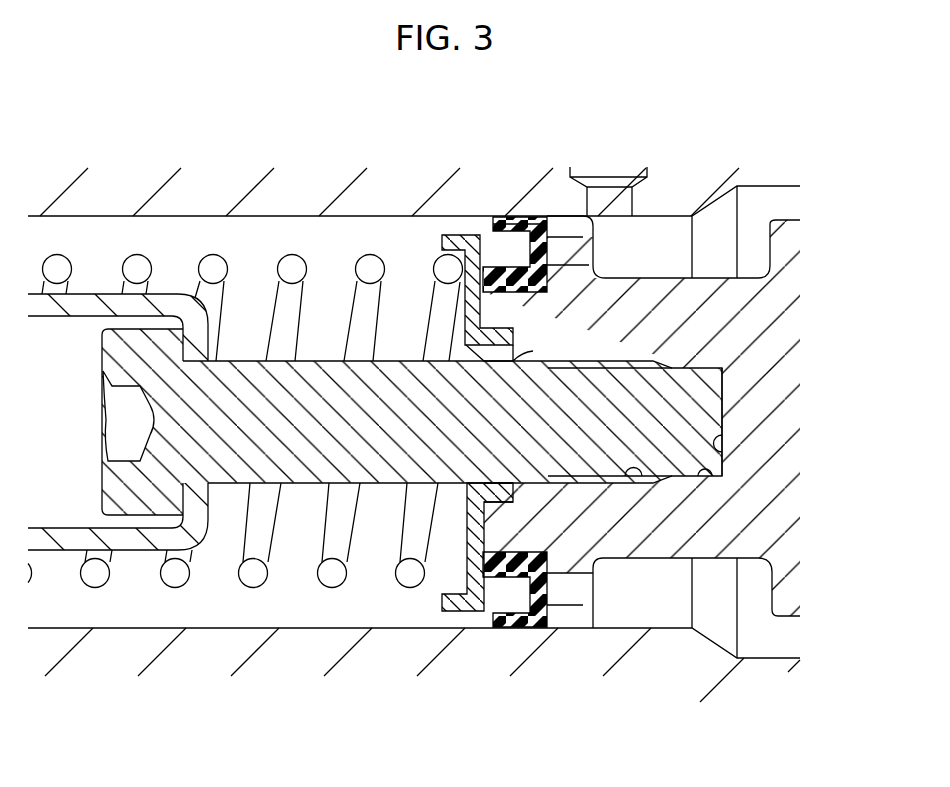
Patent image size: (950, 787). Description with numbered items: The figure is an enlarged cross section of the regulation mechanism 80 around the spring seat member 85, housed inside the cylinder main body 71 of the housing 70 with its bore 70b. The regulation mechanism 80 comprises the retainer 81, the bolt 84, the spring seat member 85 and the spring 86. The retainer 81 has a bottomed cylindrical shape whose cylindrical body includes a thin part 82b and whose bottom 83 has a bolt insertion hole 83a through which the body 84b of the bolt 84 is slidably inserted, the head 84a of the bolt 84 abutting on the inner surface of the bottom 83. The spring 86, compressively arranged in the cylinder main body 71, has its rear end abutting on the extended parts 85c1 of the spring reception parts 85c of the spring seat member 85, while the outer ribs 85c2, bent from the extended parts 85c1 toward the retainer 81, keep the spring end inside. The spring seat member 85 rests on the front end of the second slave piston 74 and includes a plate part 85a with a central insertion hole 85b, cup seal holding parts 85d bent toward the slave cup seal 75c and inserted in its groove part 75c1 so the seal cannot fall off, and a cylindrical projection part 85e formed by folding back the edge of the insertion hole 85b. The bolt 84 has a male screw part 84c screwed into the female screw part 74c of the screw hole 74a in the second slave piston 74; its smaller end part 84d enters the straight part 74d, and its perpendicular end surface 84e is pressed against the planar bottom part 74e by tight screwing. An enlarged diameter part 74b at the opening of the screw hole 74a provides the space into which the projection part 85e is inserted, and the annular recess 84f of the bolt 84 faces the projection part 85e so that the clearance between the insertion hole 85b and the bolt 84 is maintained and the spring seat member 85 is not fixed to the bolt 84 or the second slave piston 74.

The housing 70 is at (731, 124).
The housing bore 70b is at (269, 618).
The cylinder main body 71 is at (90, 660).
The second slave piston 74 is at (650, 323).
The screw hole 74a is at (603, 560).
The enlarged diameter part 74b is at (540, 556).
The female screw part 74c is at (636, 545).
The straight part 74d is at (733, 530).
The bottom part 74e is at (725, 443).
The slave cup seal 75c is at (552, 216).
The groove part 75c1 is at (522, 600).
The regulation mechanism 80 is at (315, 235).
The retainer 81 is at (89, 282).
The thin part 82b is at (167, 303).
The bottom 83 is at (203, 350).
The bolt insertion hole 83a is at (192, 472).
The bolt 84 is at (392, 496).
The head 84a is at (140, 504).
The body 84b is at (312, 453).
The male screw part 84c is at (597, 498).
The end part 84d is at (697, 385).
The end surface 84e is at (723, 403).
The recess 84f is at (507, 340).
The spring seat member 85 is at (459, 621).
The plate part 85a is at (470, 330).
The insertion hole 85b is at (457, 492).
The spring reception part 85c is at (459, 224).
The extended part 85c1 is at (445, 318).
The outer rib 85c2 is at (447, 246).
The cup seal holding part 85d is at (505, 600).
The projection part 85e is at (612, 263).
The spring 86 is at (245, 575).